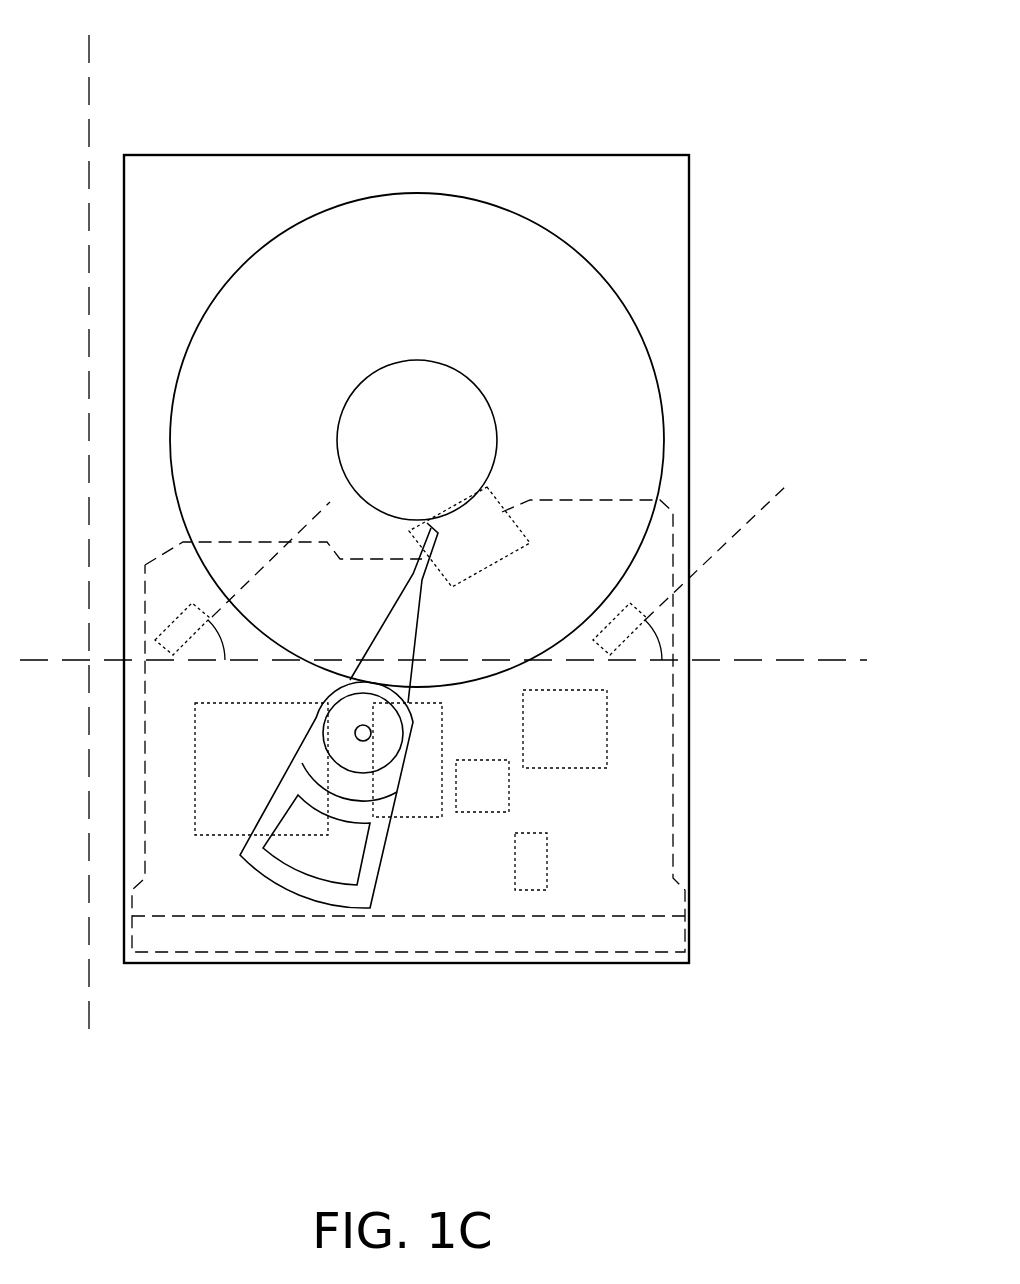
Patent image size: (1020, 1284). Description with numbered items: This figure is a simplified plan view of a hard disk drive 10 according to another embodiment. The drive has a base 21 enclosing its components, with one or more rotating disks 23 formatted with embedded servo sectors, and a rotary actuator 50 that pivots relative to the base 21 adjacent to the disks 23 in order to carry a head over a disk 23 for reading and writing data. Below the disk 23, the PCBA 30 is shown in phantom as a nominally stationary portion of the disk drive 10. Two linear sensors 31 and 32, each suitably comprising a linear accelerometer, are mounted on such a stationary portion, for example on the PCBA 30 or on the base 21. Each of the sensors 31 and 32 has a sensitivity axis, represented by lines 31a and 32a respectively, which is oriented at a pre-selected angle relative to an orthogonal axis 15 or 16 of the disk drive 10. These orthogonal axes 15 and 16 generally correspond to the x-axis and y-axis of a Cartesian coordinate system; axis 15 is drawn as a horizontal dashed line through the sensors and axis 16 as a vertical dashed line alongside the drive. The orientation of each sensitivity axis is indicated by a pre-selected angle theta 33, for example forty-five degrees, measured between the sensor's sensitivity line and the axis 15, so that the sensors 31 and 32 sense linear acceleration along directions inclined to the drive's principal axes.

The hard disk drive 10 is at (663, 118).
The orthogonal axis 15 is at (833, 652).
The orthogonal axis 16 is at (88, 62).
The base 21 is at (693, 342).
The rotating disk 23 is at (610, 281).
The PCBA 30 is at (678, 728).
The linear sensor 31 is at (612, 613).
The sensitivity axis line 31a is at (723, 552).
The linear sensor 32 is at (178, 616).
The sensitivity axis line 32a is at (263, 577).
The pre-selected angle θ 33 is at (193, 653).
The rotary actuator 50 is at (308, 715).